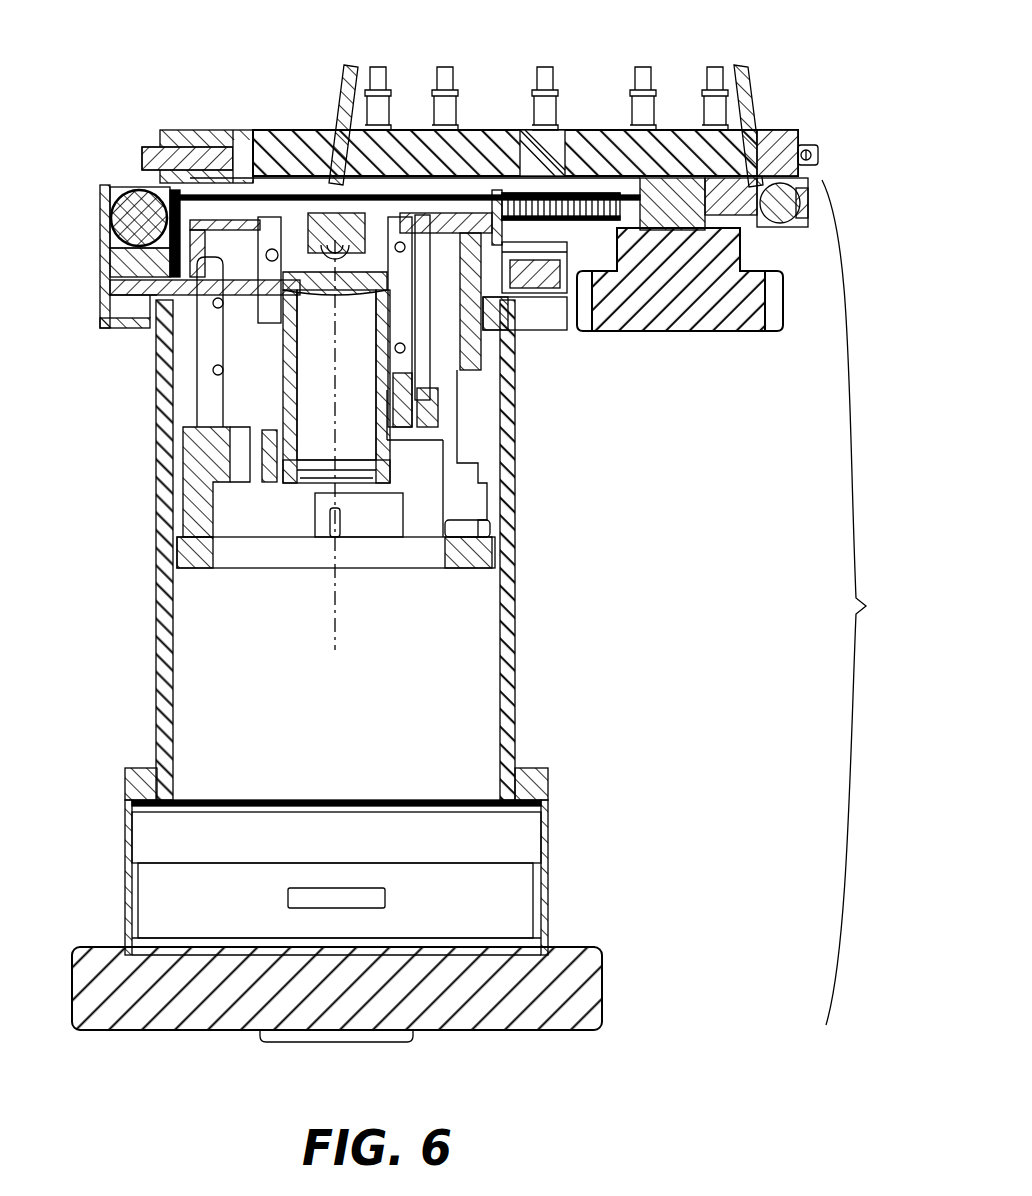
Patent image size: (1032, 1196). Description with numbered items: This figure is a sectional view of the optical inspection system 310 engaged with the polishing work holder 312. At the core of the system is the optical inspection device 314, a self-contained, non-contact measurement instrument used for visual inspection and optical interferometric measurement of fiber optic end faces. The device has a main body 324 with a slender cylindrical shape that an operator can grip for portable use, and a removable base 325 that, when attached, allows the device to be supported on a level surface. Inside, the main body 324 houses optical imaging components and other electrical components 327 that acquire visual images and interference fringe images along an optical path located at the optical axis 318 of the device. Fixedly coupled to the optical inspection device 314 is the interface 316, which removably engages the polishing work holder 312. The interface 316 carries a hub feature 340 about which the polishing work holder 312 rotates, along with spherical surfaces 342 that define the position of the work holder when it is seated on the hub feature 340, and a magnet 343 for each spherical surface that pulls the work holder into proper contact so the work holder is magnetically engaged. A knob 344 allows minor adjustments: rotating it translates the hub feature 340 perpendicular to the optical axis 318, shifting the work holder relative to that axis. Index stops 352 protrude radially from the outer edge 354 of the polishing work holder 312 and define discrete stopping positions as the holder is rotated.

The optical inspection system 310 is at (866, 606).
The polishing work holder 312 is at (490, 140).
The optical inspection device 314 is at (520, 528).
The interface 316 is at (100, 212).
The optical axis 318 is at (340, 595).
The main body 324 is at (157, 565).
The removable base 325 is at (185, 988).
The optical imaging components and other electrical components 327 is at (250, 432).
The hub feature 340 is at (550, 165).
The spherical surfaces 342 is at (812, 180).
The magnet 343 is at (770, 140).
The knob 344 is at (665, 305).
The index stops 352 is at (822, 155).
The outer edge 354 is at (800, 135).